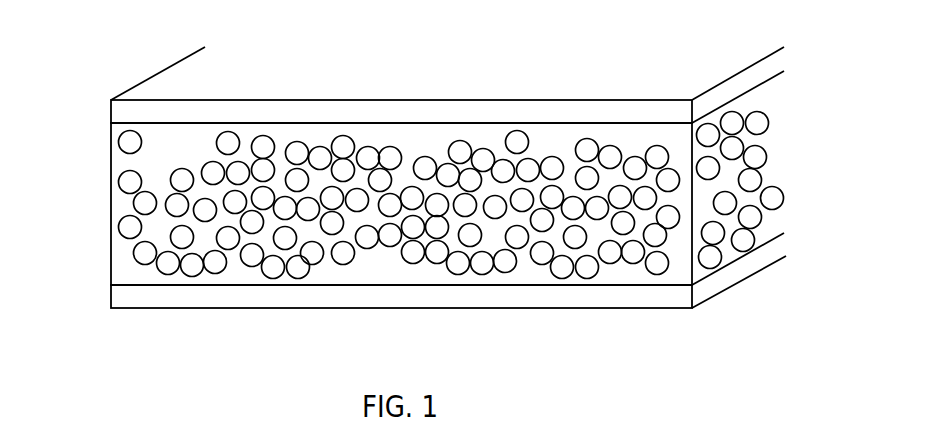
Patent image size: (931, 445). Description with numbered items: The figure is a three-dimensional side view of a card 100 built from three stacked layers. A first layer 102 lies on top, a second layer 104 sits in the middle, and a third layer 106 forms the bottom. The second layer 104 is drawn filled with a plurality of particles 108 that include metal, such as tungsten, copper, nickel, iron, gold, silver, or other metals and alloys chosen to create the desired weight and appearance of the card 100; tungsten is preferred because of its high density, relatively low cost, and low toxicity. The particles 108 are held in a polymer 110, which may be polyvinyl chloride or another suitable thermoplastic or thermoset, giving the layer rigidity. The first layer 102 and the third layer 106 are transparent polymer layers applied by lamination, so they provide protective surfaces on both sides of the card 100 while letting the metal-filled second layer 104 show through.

The card 100 is at (443, 200).
The first layer 102 is at (111, 112).
The second layer 104 is at (111, 204).
The third layer 106 is at (111, 298).
The particles 108 is at (456, 268).
The polymer 110 is at (378, 270).